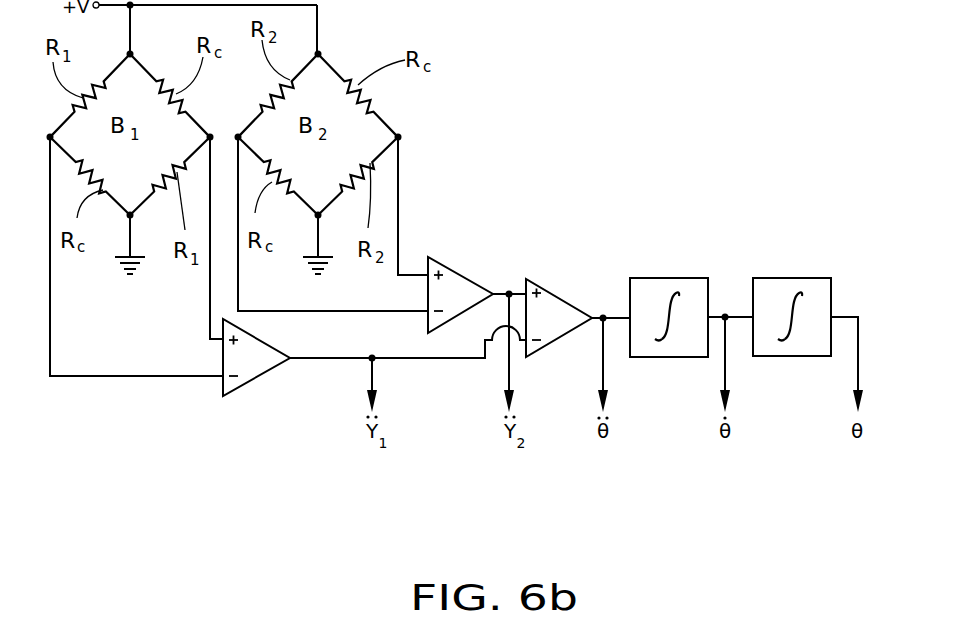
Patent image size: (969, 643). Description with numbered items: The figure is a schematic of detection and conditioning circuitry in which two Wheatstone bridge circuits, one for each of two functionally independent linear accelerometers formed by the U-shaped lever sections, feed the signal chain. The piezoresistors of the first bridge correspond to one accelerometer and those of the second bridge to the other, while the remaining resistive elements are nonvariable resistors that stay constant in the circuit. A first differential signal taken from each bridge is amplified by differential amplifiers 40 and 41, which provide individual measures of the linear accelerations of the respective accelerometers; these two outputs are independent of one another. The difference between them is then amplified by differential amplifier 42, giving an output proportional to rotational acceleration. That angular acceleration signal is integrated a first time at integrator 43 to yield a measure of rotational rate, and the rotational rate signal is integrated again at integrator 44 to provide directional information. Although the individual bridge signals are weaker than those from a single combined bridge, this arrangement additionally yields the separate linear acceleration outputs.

The differential amplifier 40 is at (260, 362).
The differential amplifier 41 is at (467, 288).
The differential amplifier 42 is at (560, 312).
The first integrator 43 is at (663, 287).
The second integrator 44 is at (815, 288).